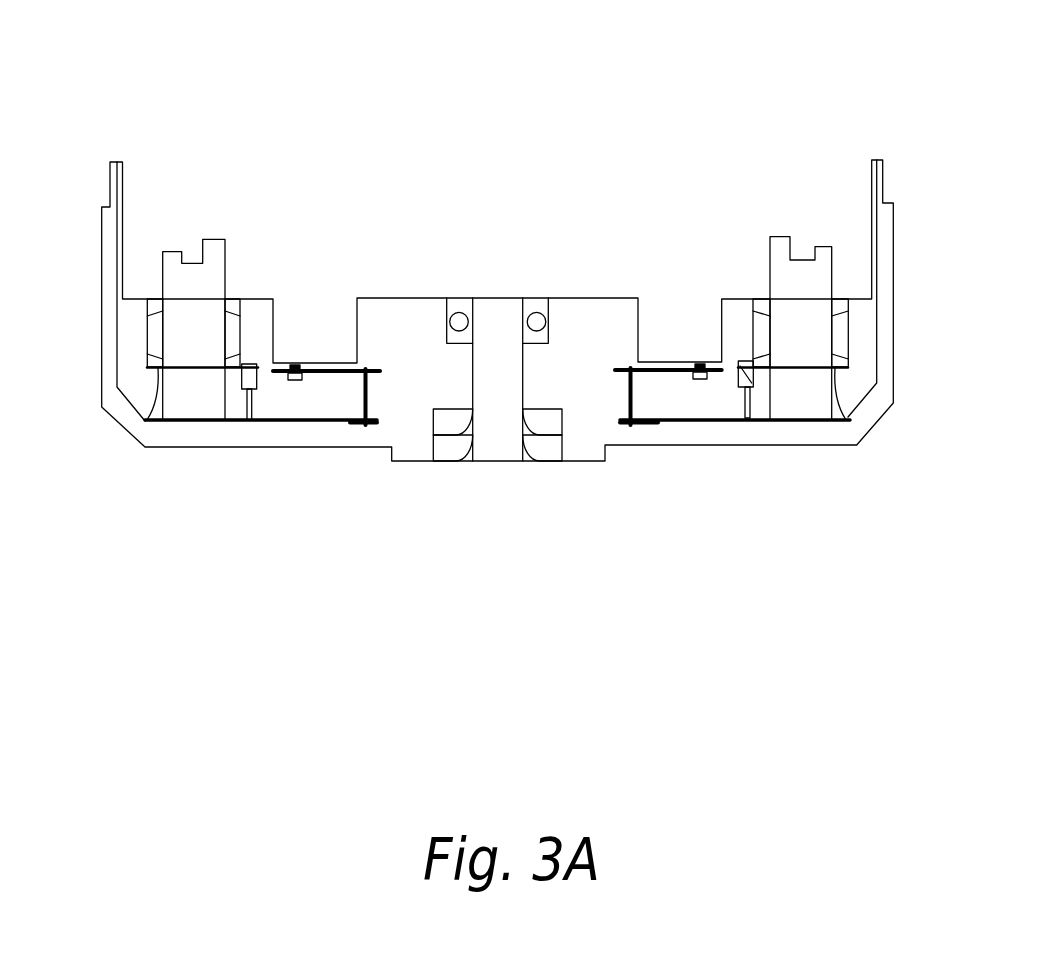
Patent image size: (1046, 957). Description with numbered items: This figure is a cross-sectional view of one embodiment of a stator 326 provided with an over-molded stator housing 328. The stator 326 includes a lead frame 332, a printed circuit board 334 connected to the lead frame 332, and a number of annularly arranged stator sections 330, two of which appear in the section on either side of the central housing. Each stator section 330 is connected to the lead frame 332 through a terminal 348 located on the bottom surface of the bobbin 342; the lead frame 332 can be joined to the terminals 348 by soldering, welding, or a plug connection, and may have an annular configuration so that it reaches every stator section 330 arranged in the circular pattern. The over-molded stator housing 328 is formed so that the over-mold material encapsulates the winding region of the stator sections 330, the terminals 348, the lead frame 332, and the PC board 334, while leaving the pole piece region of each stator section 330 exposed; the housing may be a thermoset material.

The stator 326 is at (502, 97).
The over-molded stator housing 328 is at (597, 308).
The stator section 330 is at (203, 211).
The lead frame 332 is at (285, 425).
The printed circuit (PC) board 334 is at (340, 375).
The bobbin 342 is at (158, 370).
The terminal 348 is at (245, 403).